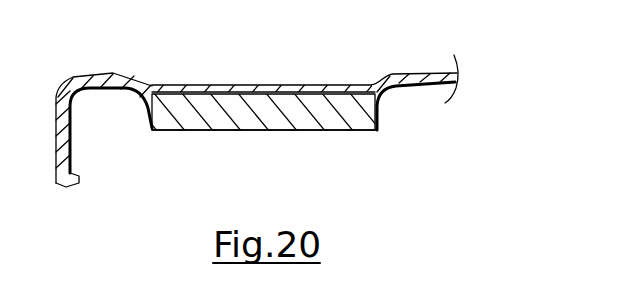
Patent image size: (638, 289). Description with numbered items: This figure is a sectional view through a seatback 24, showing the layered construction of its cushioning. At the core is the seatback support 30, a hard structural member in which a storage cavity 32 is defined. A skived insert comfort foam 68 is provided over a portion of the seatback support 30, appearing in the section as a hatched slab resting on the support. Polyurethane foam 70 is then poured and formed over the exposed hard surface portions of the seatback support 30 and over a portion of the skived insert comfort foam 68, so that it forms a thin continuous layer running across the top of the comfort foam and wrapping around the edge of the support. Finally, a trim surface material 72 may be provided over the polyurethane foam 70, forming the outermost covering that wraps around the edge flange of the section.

The seatback 24 is at (271, 73).
The seatback support 30 is at (175, 131).
The storage cavity 32 is at (321, 148).
The skived insert comfort foam 68 is at (257, 113).
The polyurethane foam 70 is at (138, 92).
The trim surface material 72 is at (96, 74).